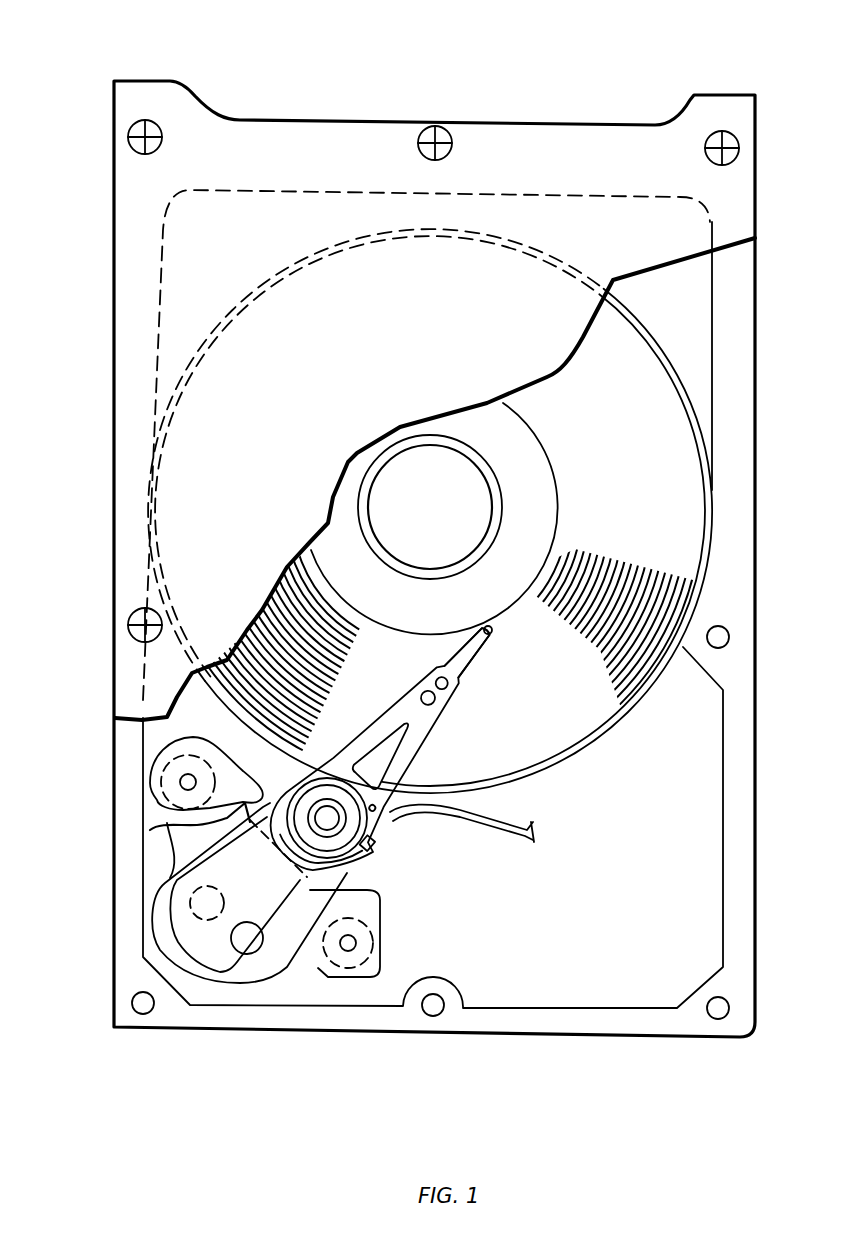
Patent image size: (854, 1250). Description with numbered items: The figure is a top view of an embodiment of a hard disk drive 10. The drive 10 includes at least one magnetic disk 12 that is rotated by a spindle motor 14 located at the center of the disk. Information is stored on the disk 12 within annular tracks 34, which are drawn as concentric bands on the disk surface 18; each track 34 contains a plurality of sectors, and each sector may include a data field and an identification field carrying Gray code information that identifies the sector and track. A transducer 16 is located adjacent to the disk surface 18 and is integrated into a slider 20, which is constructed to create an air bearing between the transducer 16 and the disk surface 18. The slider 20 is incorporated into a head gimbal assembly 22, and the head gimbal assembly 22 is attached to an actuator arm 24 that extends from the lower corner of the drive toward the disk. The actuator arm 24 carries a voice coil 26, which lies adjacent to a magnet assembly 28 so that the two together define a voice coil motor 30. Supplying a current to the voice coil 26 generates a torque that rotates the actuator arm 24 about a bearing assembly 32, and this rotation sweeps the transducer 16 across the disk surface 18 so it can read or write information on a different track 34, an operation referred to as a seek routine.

The hard disk drive 10 is at (688, 88).
The magnetic disk 12 is at (674, 453).
The spindle motor 14 is at (410, 472).
The transducer 16 is at (490, 628).
The disk surface 18 is at (543, 540).
The slider 20 is at (488, 634).
The head gimbal assembly 22 is at (434, 725).
The actuator arm 24 is at (227, 818).
The voice coil 26 is at (180, 895).
The magnet assembly 28 is at (190, 850).
The voice coil motor 30 is at (298, 976).
The bearing assembly 32 is at (333, 830).
The annular tracks 34 is at (277, 663).